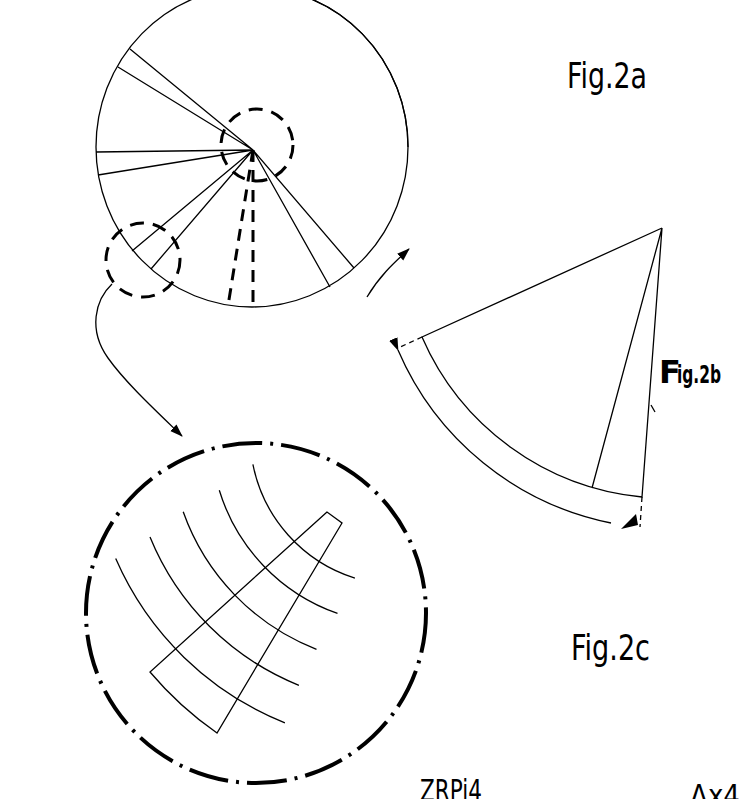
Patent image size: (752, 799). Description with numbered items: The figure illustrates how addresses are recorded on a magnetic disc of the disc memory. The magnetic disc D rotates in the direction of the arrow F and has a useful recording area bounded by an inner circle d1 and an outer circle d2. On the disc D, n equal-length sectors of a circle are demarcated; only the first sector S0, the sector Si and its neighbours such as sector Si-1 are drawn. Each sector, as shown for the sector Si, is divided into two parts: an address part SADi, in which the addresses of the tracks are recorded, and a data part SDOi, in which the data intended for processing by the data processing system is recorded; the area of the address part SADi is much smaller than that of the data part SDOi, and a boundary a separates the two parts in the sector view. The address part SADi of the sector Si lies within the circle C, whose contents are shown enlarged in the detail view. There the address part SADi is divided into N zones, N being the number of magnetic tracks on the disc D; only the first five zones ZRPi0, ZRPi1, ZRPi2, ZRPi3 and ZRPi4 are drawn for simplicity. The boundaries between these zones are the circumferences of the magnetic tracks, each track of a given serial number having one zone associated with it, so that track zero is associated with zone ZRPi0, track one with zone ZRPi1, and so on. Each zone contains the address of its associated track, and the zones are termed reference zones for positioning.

In FIG. 2A, the magnetic disc D is at (383, 103).
In FIG. 2A, the outer bounding circle d2 is at (367, 33).
In FIG. 2A, the inner bounding circle d1 is at (283, 127).
In FIG. 2A, the sector Si is at (100, 176).
In FIG. 2B, the sector Si is at (520, 433).
In FIG. 2A, the circle C is at (108, 246).
In FIG. 2C, the circle C is at (359, 749).
In FIG. 2A, the sector Si-1 is at (210, 304).
In FIG. 2A, the sector S0 is at (318, 298).
In FIG. 2A, the arrow F is at (400, 272).
In FIG. 2B, the data part SDOi is at (508, 298).
In FIG. 2B, the address part SADi is at (646, 437).
In FIG. 2B, the address zone boundary a is at (650, 422).
In FIG. 2C, the reference zone for positioning ZRPi4 is at (297, 562).
In FIG. 2C, the reference zone for positioning ZRPi3 is at (267, 588).
In FIG. 2C, the reference zone for positioning ZRPi2 is at (240, 615).
In FIG. 2C, the reference zone for positioning ZRPi1 is at (211, 642).
In FIG. 2C, the reference zone for positioning ZRPi0 is at (180, 670).